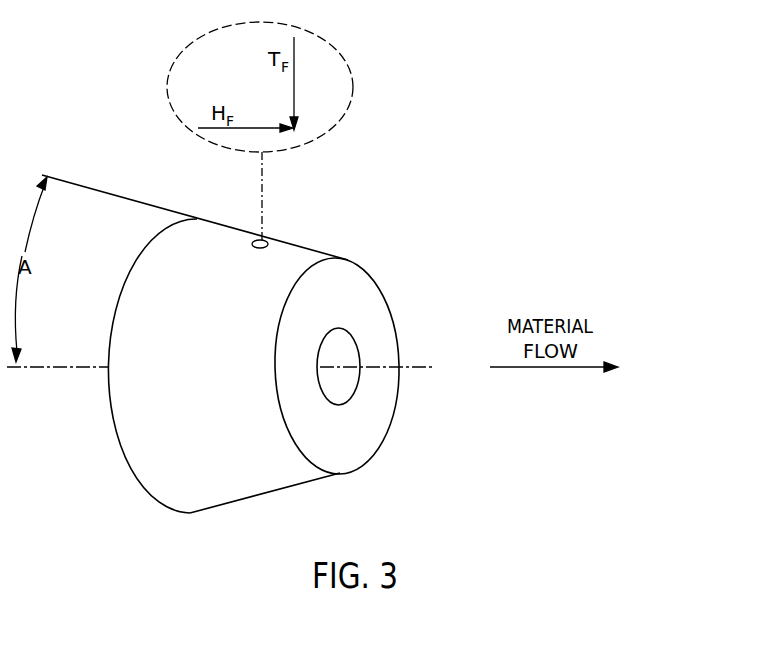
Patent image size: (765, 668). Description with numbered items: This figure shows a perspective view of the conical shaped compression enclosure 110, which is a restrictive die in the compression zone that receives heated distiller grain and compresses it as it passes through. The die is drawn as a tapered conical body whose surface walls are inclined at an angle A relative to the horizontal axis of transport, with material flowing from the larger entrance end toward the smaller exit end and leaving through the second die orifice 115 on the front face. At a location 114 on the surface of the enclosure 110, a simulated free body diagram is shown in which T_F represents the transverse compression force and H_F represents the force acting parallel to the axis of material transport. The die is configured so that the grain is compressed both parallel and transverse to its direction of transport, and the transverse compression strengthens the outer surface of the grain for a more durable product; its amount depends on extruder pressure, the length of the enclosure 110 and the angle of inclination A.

The compression enclosure 110 is at (180, 512).
The location inside the enclosure 114 is at (265, 237).
The second die orifice 115 is at (351, 352).